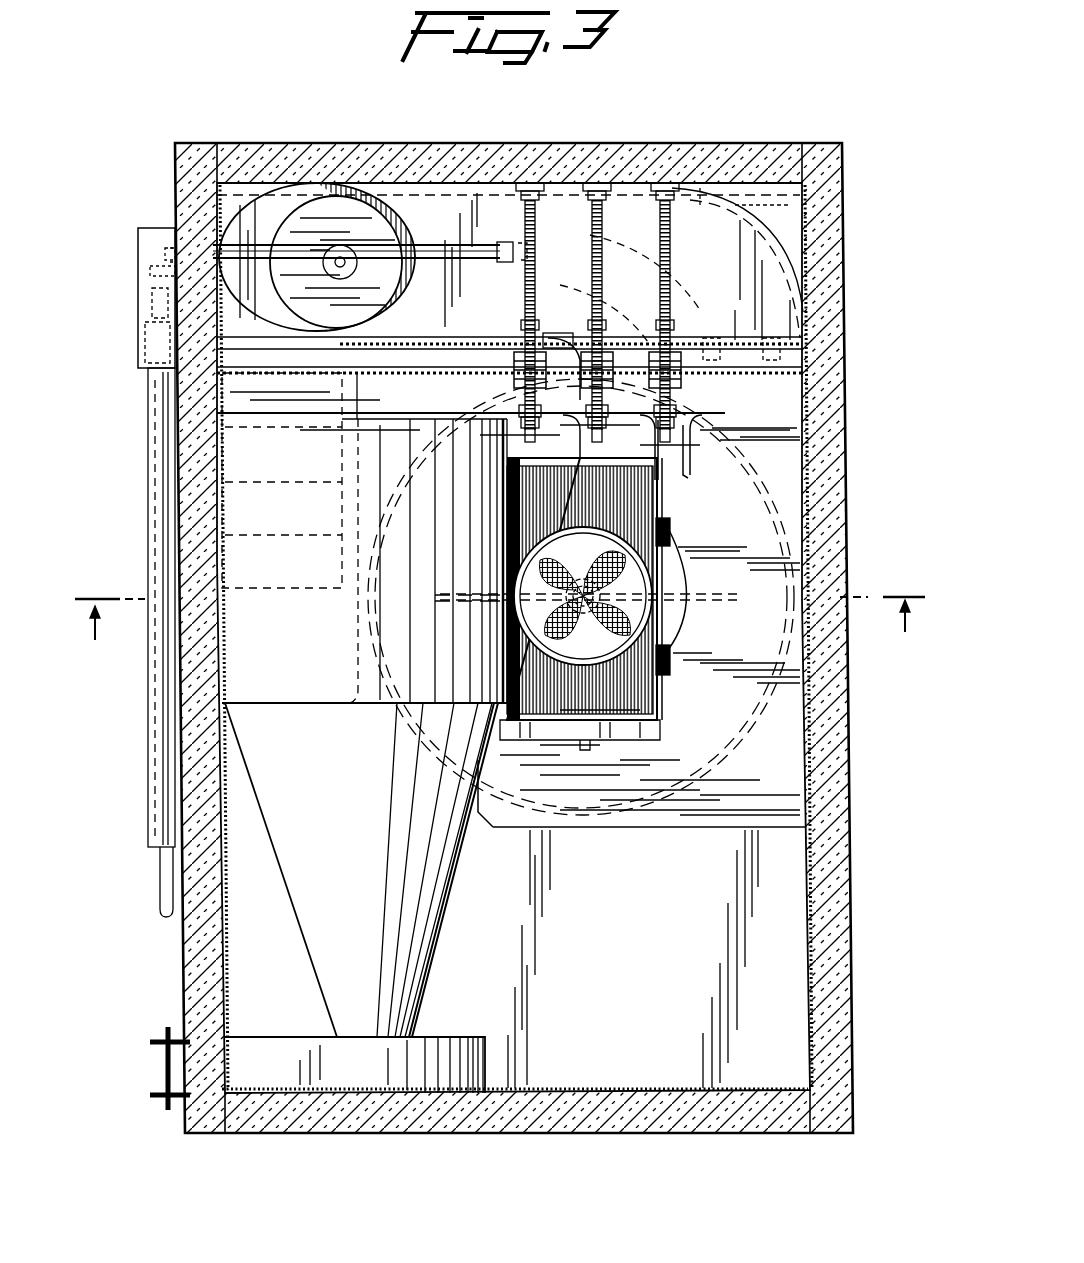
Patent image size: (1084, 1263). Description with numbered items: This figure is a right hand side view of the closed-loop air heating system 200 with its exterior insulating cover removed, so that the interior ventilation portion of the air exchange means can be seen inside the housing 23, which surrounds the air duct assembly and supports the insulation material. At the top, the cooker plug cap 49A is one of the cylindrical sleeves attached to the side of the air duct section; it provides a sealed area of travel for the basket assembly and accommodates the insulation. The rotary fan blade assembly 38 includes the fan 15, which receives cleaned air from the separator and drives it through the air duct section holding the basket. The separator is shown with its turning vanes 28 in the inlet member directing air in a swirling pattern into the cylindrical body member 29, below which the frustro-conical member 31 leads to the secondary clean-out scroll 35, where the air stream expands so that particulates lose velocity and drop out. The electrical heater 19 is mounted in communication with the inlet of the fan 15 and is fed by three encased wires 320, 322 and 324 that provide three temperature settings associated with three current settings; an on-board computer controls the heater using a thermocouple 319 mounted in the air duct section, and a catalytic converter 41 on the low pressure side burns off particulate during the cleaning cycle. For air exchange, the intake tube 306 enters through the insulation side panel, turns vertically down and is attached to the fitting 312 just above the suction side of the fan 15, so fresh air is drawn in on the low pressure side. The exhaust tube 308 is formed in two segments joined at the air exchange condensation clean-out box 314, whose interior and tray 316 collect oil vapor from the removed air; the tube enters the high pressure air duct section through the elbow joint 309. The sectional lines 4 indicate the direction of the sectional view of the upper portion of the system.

The fan 15 is at (690, 573).
The electrical heater 19 is at (670, 672).
The housing 23 is at (815, 998).
The turning vanes 28 is at (228, 488).
The cylindrical body member 29 is at (262, 660).
The frustro-conical member 31 is at (318, 934).
The secondary clean-out scroll 35 is at (447, 1077).
The rotary fan blade assembly 38 is at (714, 602).
The catalytic converter 41 is at (670, 530).
The cooker plug cap 49A is at (415, 212).
The closed-loop air heating system 200 is at (850, 431).
The intake tube 306 is at (148, 427).
The exhaust tube 308 is at (488, 238).
The elbow joint 309 is at (532, 186).
The fitting 312 is at (575, 345).
The air exchange condensation clean-out box 314 is at (138, 307).
The tray 316 is at (146, 272).
The thermocouple 319 is at (792, 327).
The encased wire 320 is at (548, 208).
The encased wire 322 is at (617, 208).
The encased wire 324 is at (690, 208).
The sectional lines 4- 4 is at (500, 604).